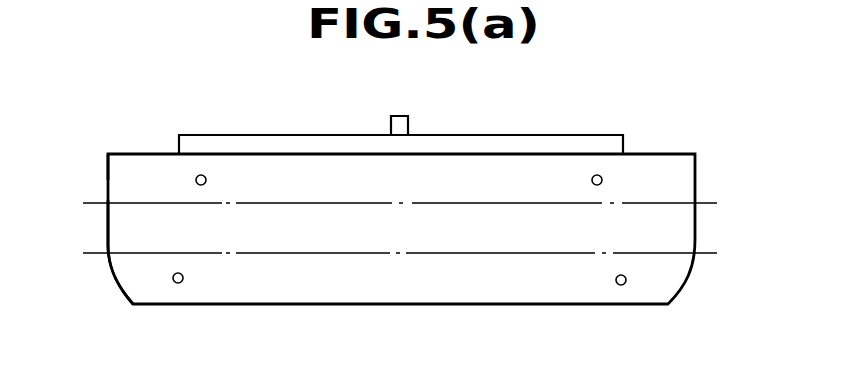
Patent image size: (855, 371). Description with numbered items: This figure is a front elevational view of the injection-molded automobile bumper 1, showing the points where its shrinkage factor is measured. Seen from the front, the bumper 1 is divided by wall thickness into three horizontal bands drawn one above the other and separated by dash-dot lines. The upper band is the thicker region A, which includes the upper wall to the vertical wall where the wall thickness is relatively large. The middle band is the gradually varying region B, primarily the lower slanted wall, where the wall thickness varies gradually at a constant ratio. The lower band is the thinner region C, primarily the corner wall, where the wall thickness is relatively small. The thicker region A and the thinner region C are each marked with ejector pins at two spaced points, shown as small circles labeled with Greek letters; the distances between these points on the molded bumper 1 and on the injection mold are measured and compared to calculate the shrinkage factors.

The automobile bumper 1 is at (606, 131).
The thicker region A is at (118, 173).
The gradually varying region B is at (120, 226).
The thinner region C is at (130, 277).